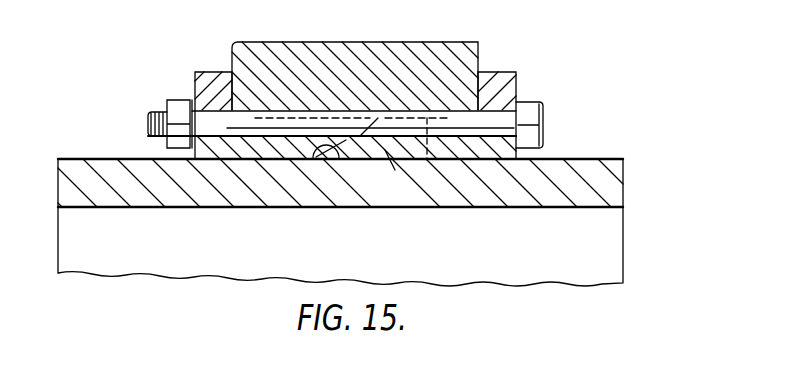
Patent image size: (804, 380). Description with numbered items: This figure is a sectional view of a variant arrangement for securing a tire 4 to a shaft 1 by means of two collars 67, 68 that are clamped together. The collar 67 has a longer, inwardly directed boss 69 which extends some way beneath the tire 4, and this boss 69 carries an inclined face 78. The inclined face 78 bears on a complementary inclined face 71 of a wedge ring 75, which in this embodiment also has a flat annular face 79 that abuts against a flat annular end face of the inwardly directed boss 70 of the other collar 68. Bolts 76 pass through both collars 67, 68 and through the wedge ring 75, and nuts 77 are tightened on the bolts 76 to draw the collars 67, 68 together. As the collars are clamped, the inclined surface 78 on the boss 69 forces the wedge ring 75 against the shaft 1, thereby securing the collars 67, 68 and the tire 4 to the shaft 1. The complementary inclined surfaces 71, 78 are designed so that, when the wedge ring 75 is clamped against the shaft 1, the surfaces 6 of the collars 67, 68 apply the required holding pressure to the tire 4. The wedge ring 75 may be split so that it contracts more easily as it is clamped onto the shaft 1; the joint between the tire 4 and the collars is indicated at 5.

The shaft 1 is at (205, 190).
The tire 4 is at (339, 60).
The joint surface 5 is at (232, 96).
The surfaces of the collars 6 is at (245, 100).
The collar 67 is at (211, 83).
The collar 68 is at (510, 88).
The boss 69 is at (270, 148).
The inwardly directed boss 70 is at (448, 148).
The inclined face of the wedge ring 71 is at (347, 140).
The wedge ring 75 is at (385, 150).
The bolts 76 is at (503, 127).
The nuts 77 is at (180, 110).
The inclined face of the boss 78 is at (313, 158).
The flat annular face 79 is at (426, 160).